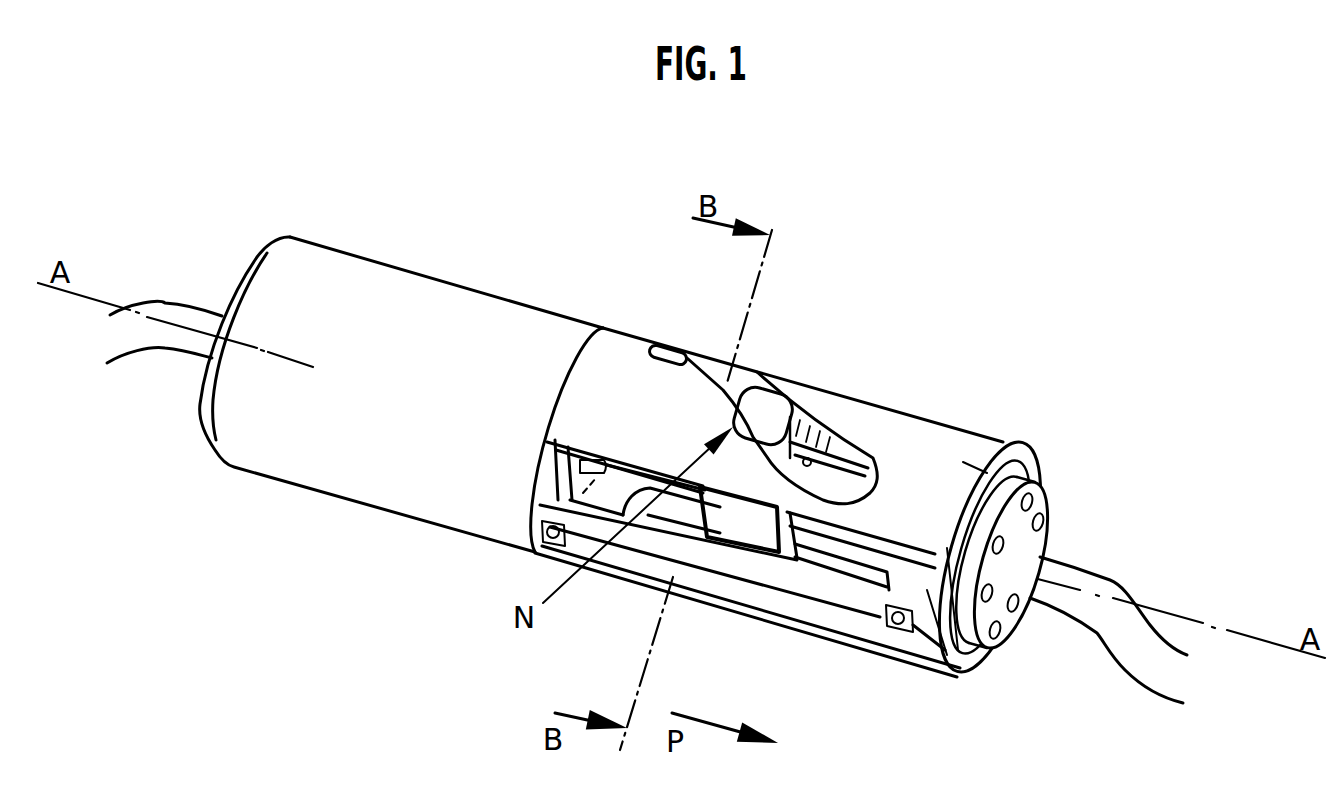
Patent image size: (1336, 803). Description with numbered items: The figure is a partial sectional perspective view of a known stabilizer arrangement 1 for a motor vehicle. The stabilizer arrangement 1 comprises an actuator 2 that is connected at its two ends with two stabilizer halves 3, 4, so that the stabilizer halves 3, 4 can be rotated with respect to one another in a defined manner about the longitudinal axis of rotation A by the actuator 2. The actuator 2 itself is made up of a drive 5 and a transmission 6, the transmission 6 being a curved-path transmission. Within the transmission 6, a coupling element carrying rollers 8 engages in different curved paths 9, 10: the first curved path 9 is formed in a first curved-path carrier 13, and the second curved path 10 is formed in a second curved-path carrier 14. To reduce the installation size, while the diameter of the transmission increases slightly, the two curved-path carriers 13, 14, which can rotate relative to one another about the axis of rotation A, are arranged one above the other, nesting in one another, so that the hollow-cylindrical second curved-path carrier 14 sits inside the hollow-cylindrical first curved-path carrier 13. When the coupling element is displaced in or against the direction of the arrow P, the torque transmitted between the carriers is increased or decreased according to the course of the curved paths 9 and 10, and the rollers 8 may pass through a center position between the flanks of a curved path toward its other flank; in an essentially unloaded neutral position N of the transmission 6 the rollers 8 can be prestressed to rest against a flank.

The stabilizer arrangement 1 is at (350, 631).
The actuator 2 is at (448, 258).
The stabilizer half 3 is at (167, 303).
The stabilizer half 4 is at (1113, 582).
The drive 5 is at (483, 323).
The transmission 6 is at (612, 606).
The rollers 8 is at (770, 413).
The first curved path 9 is at (737, 382).
The second curved path 10 is at (840, 467).
The first curved-path carrier 13 is at (948, 448).
The second curved-path carrier 14 is at (845, 593).